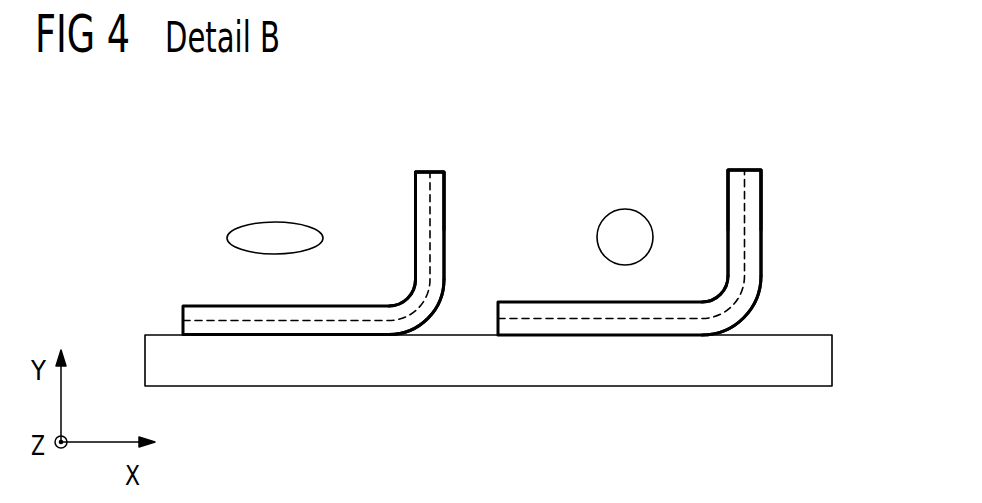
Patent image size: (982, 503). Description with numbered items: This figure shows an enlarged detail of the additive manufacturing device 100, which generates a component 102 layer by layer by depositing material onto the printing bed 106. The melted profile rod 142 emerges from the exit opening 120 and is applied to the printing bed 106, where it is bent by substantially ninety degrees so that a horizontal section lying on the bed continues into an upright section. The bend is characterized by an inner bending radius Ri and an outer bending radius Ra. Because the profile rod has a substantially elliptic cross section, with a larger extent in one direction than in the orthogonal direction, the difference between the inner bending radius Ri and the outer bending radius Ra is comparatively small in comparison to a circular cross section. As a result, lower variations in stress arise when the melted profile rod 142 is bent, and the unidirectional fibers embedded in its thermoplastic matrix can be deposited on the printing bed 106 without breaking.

The additive manufacturing device 100 is at (187, 163).
The component 102 is at (200, 314).
The printing bed 106 is at (293, 387).
The exit opening 120 is at (415, 186).
The melted profile rod 142 is at (444, 197).
The inner bending radius Ri is at (718, 293).
The outer bending radius Ra is at (427, 322).